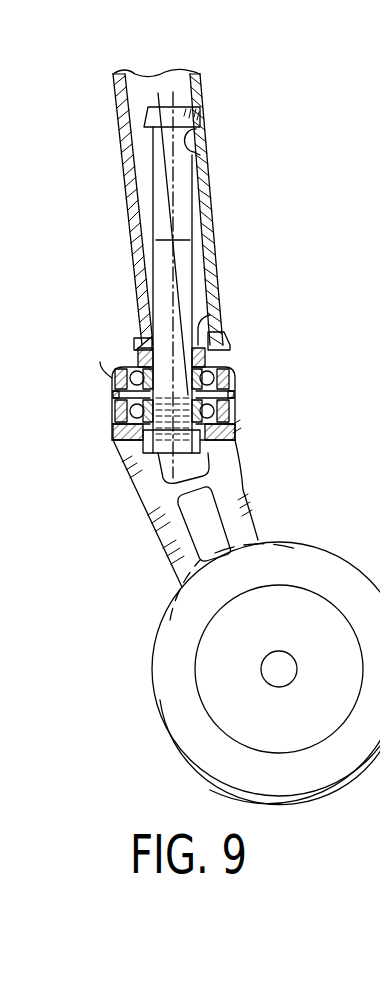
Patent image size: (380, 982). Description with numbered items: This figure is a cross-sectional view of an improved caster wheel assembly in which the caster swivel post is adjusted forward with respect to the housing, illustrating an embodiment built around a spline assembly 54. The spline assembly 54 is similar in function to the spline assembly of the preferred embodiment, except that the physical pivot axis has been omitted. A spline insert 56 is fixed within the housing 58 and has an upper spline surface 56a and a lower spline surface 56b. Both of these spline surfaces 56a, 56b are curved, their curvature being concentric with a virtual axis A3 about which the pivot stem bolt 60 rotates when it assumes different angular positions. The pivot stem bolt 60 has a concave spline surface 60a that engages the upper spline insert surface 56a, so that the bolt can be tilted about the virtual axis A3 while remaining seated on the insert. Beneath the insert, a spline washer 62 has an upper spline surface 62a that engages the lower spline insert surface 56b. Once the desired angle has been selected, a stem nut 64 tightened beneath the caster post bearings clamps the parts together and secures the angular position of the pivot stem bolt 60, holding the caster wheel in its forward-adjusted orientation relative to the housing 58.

The spline assembly 54 is at (250, 356).
The spline insert 56 is at (228, 332).
The upper spline surface 56a is at (122, 120).
The lower spline surface 56b is at (137, 345).
The housing 58 is at (205, 127).
The pivot stem bolt 60 is at (197, 302).
The concave spline surface 60a is at (200, 153).
The spline washer 62 is at (230, 364).
The upper spline surface 62a is at (227, 311).
The stem nut 64 is at (203, 453).
The virtual axis A3 is at (214, 222).